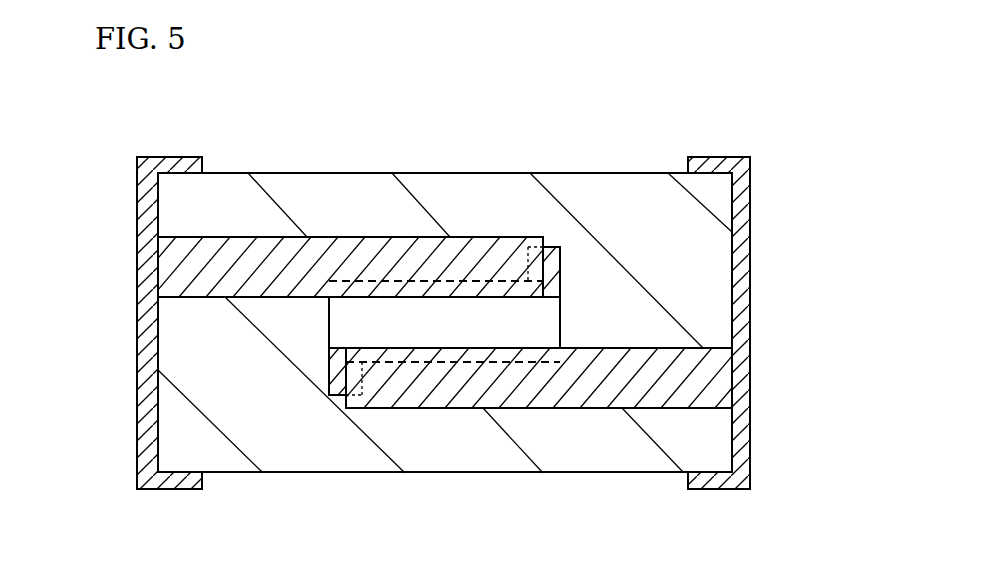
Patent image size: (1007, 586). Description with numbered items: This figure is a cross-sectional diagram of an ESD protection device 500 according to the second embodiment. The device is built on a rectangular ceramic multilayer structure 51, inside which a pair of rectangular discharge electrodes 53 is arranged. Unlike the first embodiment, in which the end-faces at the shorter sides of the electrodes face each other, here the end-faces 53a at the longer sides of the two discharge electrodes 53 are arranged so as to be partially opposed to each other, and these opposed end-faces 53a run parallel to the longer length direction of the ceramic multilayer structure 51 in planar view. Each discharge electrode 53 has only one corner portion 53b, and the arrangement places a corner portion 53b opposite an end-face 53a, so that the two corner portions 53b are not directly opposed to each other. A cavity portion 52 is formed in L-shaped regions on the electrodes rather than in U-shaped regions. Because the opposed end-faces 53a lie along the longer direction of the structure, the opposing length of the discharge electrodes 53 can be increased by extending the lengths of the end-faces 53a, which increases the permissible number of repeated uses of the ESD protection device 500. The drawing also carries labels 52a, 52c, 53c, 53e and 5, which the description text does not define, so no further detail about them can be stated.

The ESD protection device 500 is at (97, 122).
The ceramic multilayer structure 51 is at (697, 192).
The cavity portion 52 is at (545, 318).
The dielectric layer central portion 52a is at (434, 319).
The dielectric layer end region 52c is at (553, 277).
The discharge electrodes 53 is at (180, 267).
The end-face 53a is at (463, 282).
The corner portion 53b is at (562, 290).
The internal electrode boundary line 53c is at (560, 262).
The internal electrode end portion 53e is at (555, 247).
The external electrode 5 is at (158, 435).